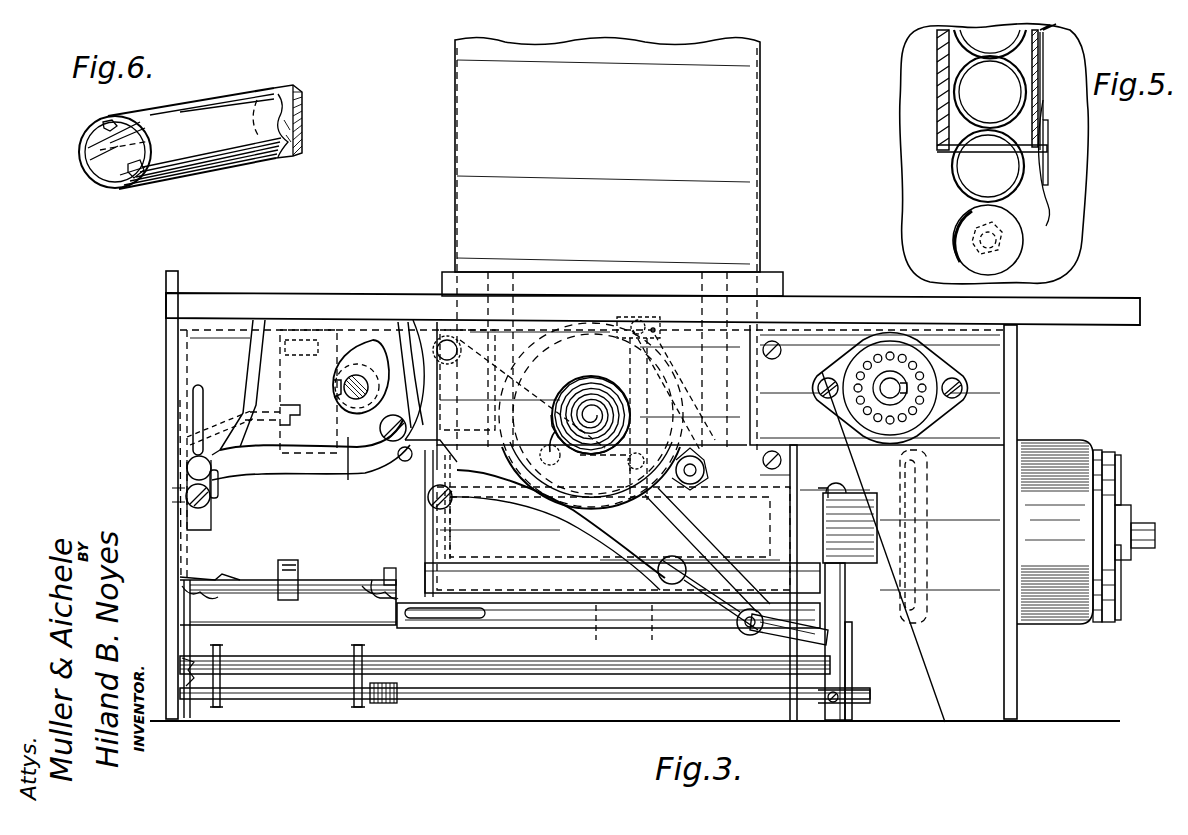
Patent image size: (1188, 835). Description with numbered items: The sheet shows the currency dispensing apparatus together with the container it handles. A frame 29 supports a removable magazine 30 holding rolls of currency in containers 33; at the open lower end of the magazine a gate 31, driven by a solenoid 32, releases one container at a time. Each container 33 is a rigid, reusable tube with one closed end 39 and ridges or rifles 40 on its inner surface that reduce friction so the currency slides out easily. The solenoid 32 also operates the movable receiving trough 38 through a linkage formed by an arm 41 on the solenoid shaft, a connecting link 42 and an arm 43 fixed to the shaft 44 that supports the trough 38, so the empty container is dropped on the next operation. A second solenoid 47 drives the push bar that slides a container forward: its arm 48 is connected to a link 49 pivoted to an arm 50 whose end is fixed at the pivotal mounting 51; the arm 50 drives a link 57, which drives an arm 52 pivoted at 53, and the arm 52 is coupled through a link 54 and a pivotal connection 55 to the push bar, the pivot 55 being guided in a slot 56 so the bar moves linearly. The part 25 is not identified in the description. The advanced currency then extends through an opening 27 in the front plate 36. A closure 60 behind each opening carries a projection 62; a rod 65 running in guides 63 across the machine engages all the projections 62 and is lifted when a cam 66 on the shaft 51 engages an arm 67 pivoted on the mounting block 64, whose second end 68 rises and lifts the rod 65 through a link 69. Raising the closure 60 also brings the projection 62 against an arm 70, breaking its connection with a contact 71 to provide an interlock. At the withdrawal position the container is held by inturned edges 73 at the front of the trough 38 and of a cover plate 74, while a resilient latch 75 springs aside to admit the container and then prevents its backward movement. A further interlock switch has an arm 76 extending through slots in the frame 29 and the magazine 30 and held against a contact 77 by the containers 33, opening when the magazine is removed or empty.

In FIG. 3, the link 25 is at (832, 638).
In FIG. 3, the opening 27 is at (180, 661).
In FIG. 5, the frame 29 is at (937, 90).
In FIG. 3, the frame 29 is at (805, 310).
In FIG. 5, the magazine 30 is at (940, 132).
In FIG. 3, the magazine 30 is at (616, 162).
In FIG. 5, the gate 31 is at (953, 240).
In FIG. 3, the gate 31 is at (734, 496).
In FIG. 3, the solenoid 32 is at (1070, 446).
In FIG. 6, the container 33 is at (232, 97).
In FIG. 5, the container 33 is at (958, 74).
In FIG. 3, the container 33 is at (560, 490).
In FIG. 3, the front plate 36 is at (166, 402).
In FIG. 3, the receiving trough 38 is at (278, 700).
In FIG. 6, the closed end 39 is at (300, 128).
In FIG. 6, the ridges or rifles 40 is at (84, 150).
In FIG. 3, the arm 41 is at (862, 493).
In FIG. 3, the connecting link 42 is at (846, 592).
In FIG. 3, the arm 43 is at (852, 654).
In FIG. 3, the shaft 44 is at (546, 700).
In FIG. 3, the solenoid 47 is at (580, 326).
In FIG. 3, the arm 48 is at (660, 345).
In FIG. 3, the link 49 is at (652, 515).
In FIG. 3, the arm 50 is at (410, 480).
In FIG. 3, the pivotal mounting 51 is at (352, 376).
In FIG. 3, the arm 52 is at (610, 545).
In FIG. 3, the pivot 53 is at (460, 360).
In FIG. 3, the link 54 is at (715, 580).
In FIG. 3, the pivotal connection 55 is at (745, 633).
In FIG. 3, the slot 56 is at (540, 617).
In FIG. 3, the link 57 is at (470, 500).
In FIG. 3, the closure 60 is at (180, 577).
In FIG. 3, the projection 62 is at (216, 497).
In FIG. 3, the guide 63 is at (207, 392).
In FIG. 3, the mounting block 64 is at (348, 480).
In FIG. 3, the rod 65 is at (210, 503).
In FIG. 3, the cam 66 is at (375, 340).
In FIG. 3, the arm 67 is at (405, 335).
In FIG. 3, the second end 68 is at (270, 472).
In FIG. 3, the link 69 is at (232, 480).
In FIG. 3, the arm 70 is at (260, 412).
In FIG. 3, the contact 71 is at (282, 428).
In FIG. 3, the inturned edges 73 is at (182, 590).
In FIG. 3, the cover plate 74 is at (254, 595).
In FIG. 3, the latch 75 is at (375, 582).
In FIG. 5, the arm 76 is at (1037, 110).
In FIG. 3, the arm 76 is at (626, 360).
In FIG. 5, the contact 77 is at (1053, 166).
In FIG. 3, the contact 77 is at (628, 508).